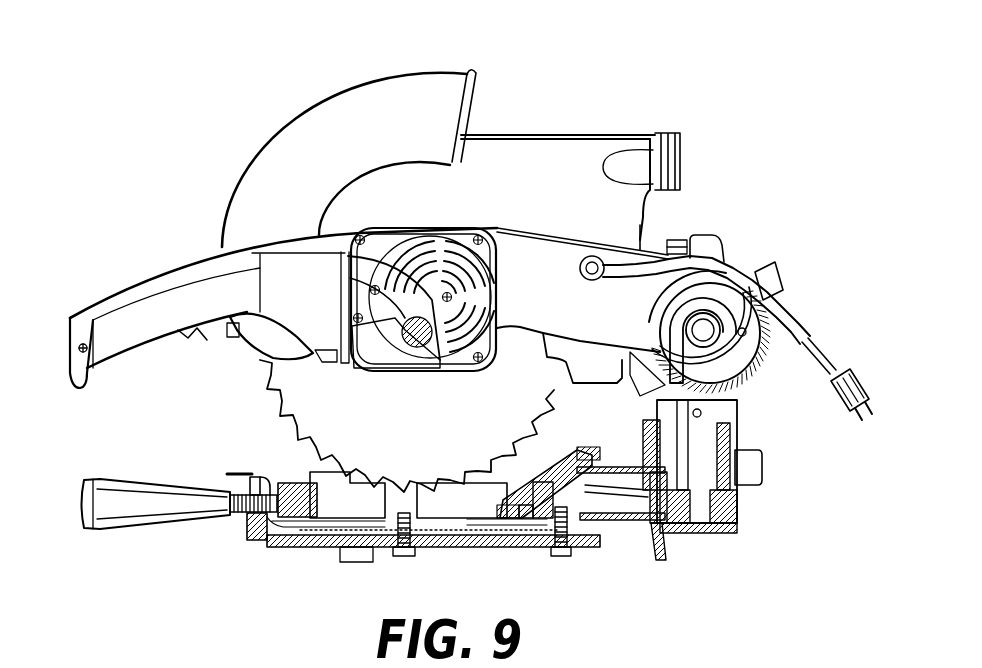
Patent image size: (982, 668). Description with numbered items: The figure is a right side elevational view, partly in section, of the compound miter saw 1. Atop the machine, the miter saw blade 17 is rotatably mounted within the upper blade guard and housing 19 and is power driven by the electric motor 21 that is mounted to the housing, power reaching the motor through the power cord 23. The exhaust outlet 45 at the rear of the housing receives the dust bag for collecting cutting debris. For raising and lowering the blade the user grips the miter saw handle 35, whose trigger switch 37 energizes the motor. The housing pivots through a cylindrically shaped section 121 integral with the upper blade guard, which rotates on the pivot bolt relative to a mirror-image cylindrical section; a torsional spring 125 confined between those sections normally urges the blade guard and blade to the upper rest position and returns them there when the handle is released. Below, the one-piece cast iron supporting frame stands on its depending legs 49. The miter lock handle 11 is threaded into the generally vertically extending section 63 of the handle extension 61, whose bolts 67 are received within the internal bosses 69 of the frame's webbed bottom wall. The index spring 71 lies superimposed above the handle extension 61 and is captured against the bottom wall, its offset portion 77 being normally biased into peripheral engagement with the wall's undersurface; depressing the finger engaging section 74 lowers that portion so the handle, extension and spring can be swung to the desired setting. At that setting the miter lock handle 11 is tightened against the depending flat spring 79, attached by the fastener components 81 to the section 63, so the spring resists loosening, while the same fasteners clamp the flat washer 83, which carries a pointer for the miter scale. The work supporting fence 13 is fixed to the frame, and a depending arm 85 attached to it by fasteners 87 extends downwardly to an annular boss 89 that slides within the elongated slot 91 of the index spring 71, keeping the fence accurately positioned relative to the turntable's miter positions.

The compound miter saw 1 is at (748, 147).
The miter lock handle 11 is at (133, 517).
The work supporting fence 13 is at (612, 457).
The miter saw blade 17 is at (293, 387).
The upper blade guard and housing 19 is at (550, 167).
The electric motor 21 is at (428, 243).
The power cord 23 is at (732, 278).
The miter saw handle 35 is at (170, 290).
The trigger switch 37 is at (193, 337).
The exhaust outlet 45 is at (682, 140).
The depending legs 49 is at (663, 553).
The handle extension 61 is at (298, 548).
The generally vertically extending section 63 is at (240, 520).
The bolts 67 is at (402, 550).
The internal bosses 69 is at (597, 520).
The index spring 71 is at (453, 537).
The finger engaging section 74 is at (235, 472).
The angularly and upwardly offset portion 77 is at (281, 545).
The depending flat spring 79 is at (275, 488).
The fastener components 81 is at (253, 480).
The flat washer 83 is at (263, 483).
The depending arm 85 is at (502, 508).
The fasteners 87 is at (604, 454).
The annular boss 89 is at (504, 525).
The elongated slot 91 is at (496, 540).
The cylindrically shaped section 121 is at (750, 378).
The torsional spring 125 is at (727, 326).